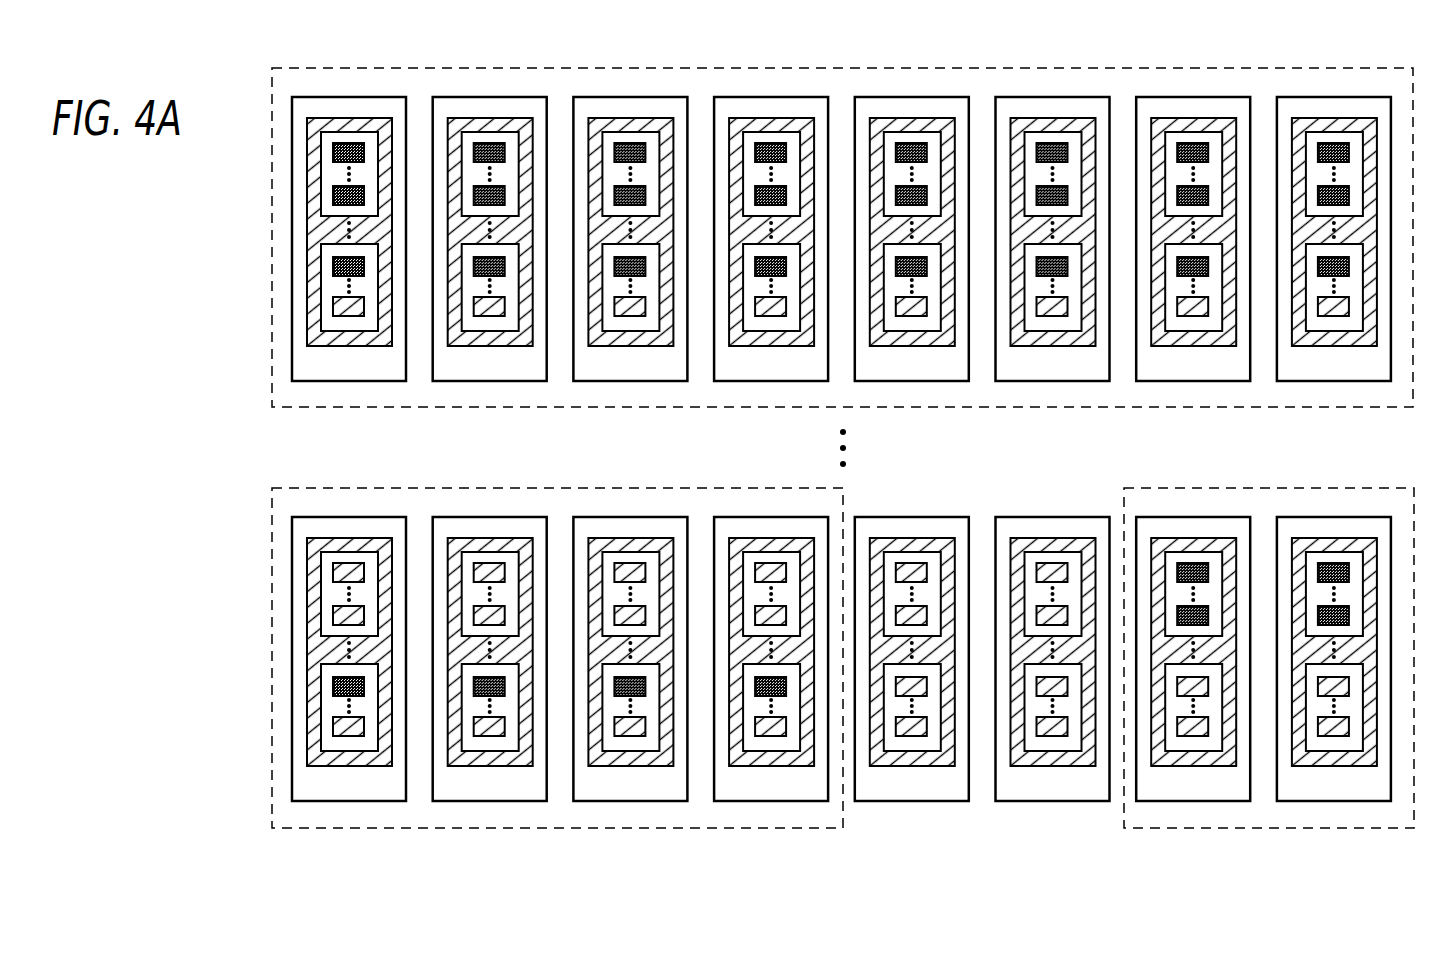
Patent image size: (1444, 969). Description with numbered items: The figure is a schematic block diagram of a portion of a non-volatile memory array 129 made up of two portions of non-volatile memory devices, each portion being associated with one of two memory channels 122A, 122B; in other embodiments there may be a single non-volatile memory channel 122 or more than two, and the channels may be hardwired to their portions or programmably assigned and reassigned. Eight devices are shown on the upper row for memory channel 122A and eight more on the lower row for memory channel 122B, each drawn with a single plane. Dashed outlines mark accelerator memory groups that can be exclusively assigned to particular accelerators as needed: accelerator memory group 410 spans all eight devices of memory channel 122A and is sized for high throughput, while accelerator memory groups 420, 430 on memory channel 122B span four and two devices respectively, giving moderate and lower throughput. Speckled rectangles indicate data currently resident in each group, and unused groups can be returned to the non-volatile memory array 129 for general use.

The non-volatile memory array 129 is at (270, 848).
The non-volatile memory channel 122 is at (252, 48).
The memory channel 122A is at (206, 253).
The memory channel 122B is at (204, 661).
The accelerator memory group 410 is at (442, 411).
The accelerator memory group 420 is at (582, 478).
The accelerator memory group 430 is at (1288, 478).